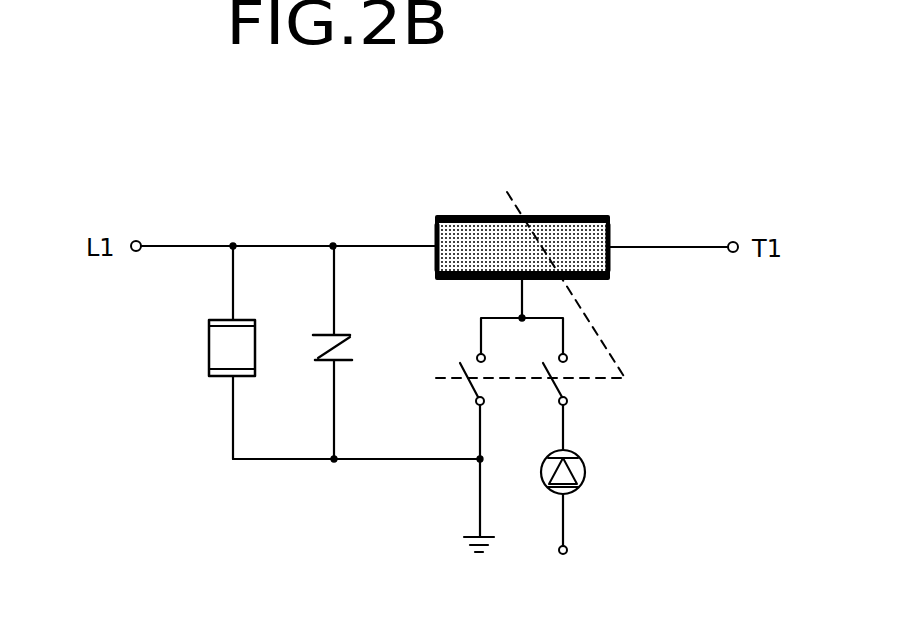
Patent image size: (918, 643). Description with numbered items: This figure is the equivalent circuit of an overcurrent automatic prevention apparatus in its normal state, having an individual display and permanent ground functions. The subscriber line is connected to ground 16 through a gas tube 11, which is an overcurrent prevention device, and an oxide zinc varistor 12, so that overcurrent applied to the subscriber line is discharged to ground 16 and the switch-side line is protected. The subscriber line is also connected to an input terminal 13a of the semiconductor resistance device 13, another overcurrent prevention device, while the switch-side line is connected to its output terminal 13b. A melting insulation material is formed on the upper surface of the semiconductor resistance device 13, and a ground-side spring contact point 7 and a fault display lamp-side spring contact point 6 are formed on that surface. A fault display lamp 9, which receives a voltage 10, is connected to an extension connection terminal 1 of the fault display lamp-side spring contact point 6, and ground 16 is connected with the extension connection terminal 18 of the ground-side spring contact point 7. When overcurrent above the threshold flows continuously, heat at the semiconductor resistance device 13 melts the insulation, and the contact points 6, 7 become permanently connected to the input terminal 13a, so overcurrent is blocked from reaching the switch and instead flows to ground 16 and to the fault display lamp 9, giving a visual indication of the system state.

The extension connection terminal 1 is at (565, 437).
The fault display lamp-side spring contact point 6 is at (552, 373).
The ground-side spring contact point 7 is at (460, 363).
The fault display lamp 9 is at (584, 484).
The voltage 10 is at (581, 532).
The gas tube 11 is at (208, 345).
The oxide zinc varistor 12 is at (352, 340).
The semiconductor resistance device 13 is at (487, 215).
The input terminal 13a is at (433, 243).
The output terminal 13b is at (611, 244).
The ground 16 is at (464, 548).
The extension connection terminal 18 is at (478, 433).